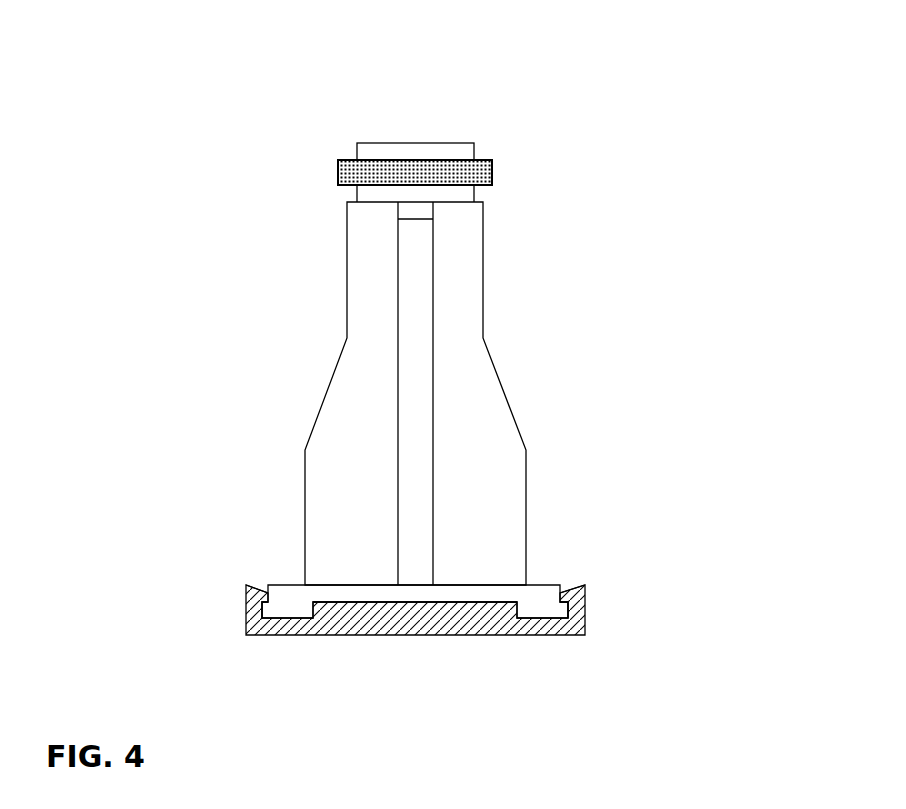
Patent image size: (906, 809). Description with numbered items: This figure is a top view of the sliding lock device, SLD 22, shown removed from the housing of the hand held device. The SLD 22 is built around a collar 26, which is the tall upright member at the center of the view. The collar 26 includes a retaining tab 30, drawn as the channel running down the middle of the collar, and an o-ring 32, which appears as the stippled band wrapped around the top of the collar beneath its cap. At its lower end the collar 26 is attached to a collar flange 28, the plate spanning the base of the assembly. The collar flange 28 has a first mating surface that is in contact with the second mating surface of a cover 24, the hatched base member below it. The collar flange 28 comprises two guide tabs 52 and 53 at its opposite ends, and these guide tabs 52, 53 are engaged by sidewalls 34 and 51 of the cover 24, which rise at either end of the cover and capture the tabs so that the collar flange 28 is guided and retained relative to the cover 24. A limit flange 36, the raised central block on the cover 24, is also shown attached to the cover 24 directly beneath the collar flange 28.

The SLD 22 is at (693, 108).
The cover 24 is at (283, 627).
The collar 26 is at (331, 431).
The collar flange 28 is at (473, 592).
The retaining tab 30 is at (427, 212).
The o-ring 32 is at (339, 172).
The sidewall 34 is at (248, 593).
The limit flange 36 is at (405, 616).
The sidewall 51 is at (583, 591).
The guide tab 52 is at (273, 612).
The guide tab 53 is at (557, 611).